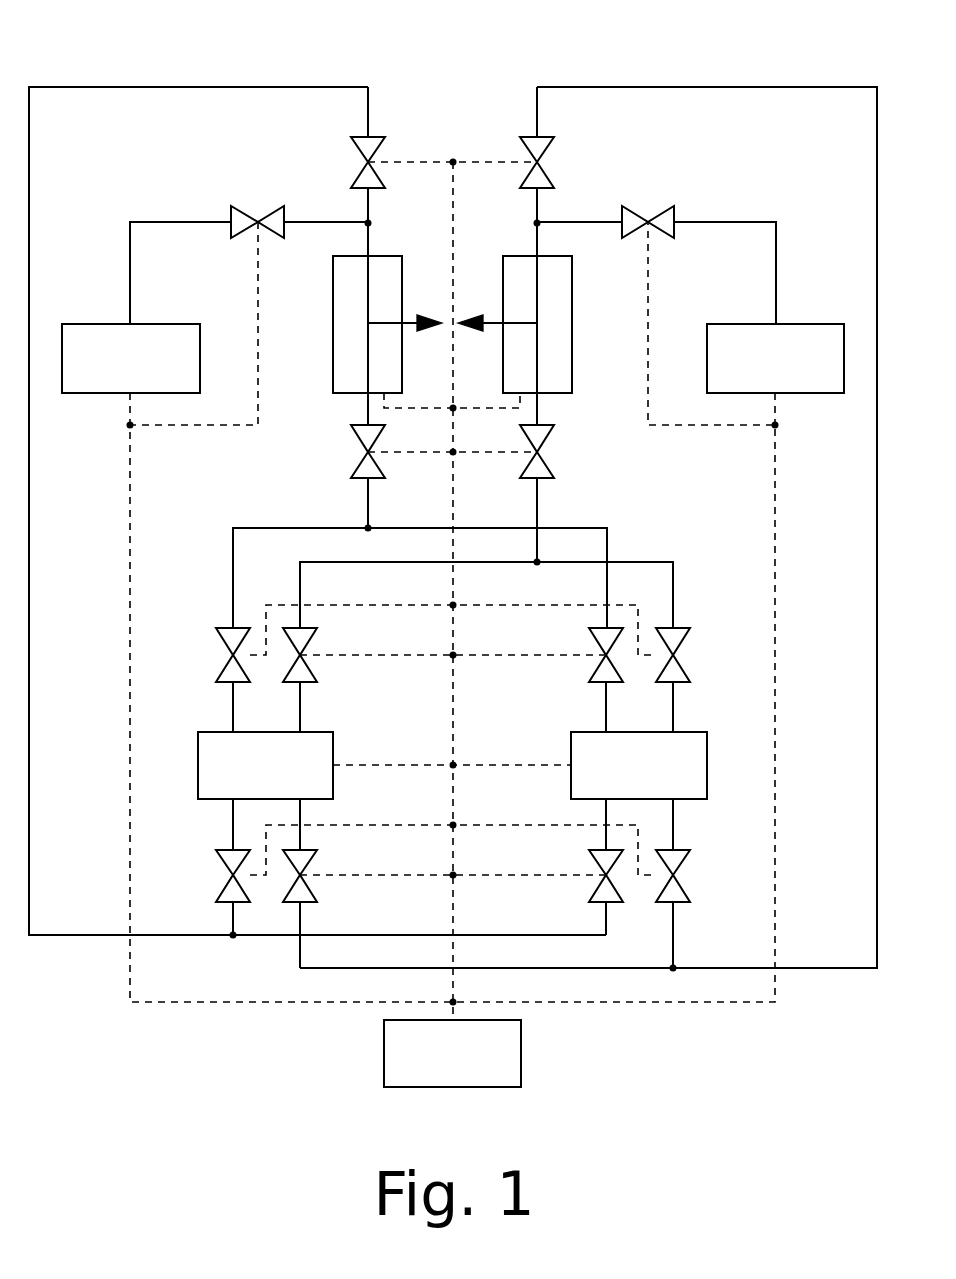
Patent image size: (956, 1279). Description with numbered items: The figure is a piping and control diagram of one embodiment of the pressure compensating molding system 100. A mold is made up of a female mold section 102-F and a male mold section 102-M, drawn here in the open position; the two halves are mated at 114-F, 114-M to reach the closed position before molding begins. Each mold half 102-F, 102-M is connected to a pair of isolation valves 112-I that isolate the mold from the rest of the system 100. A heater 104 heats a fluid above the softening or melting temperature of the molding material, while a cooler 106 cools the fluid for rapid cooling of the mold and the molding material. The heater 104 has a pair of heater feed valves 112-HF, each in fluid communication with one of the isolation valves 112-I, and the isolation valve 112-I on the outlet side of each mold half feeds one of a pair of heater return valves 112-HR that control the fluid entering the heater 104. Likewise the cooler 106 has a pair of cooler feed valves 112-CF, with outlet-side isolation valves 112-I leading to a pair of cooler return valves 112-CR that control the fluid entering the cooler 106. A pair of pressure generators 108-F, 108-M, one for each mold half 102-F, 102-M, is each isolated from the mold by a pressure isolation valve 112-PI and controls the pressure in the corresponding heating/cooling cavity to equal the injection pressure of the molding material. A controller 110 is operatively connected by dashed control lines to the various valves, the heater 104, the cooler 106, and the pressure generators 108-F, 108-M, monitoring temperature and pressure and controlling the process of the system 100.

The pressure compensating molding system 100 is at (120, 68).
The female mold section 102-F is at (342, 395).
The male mold section 102-M is at (560, 395).
The heater 104 is at (318, 732).
The cooler 106 is at (590, 732).
The pressure generator 108-F is at (163, 324).
The pressure generator 108-M is at (737, 324).
The controller 110 is at (521, 1040).
The isolation valves 112-I is at (356, 152).
The pressure isolation valve 112-PI is at (248, 210).
The heater feed valves 112-HF is at (222, 645).
The cooler feed valves 112-CF is at (685, 645).
The heater return valves 112-HR is at (222, 868).
The cooler return valves 112-CR is at (728, 834).
The mating connection of female mold half 114-F is at (385, 320).
The mating connection of male mold half 114-M is at (503, 382).